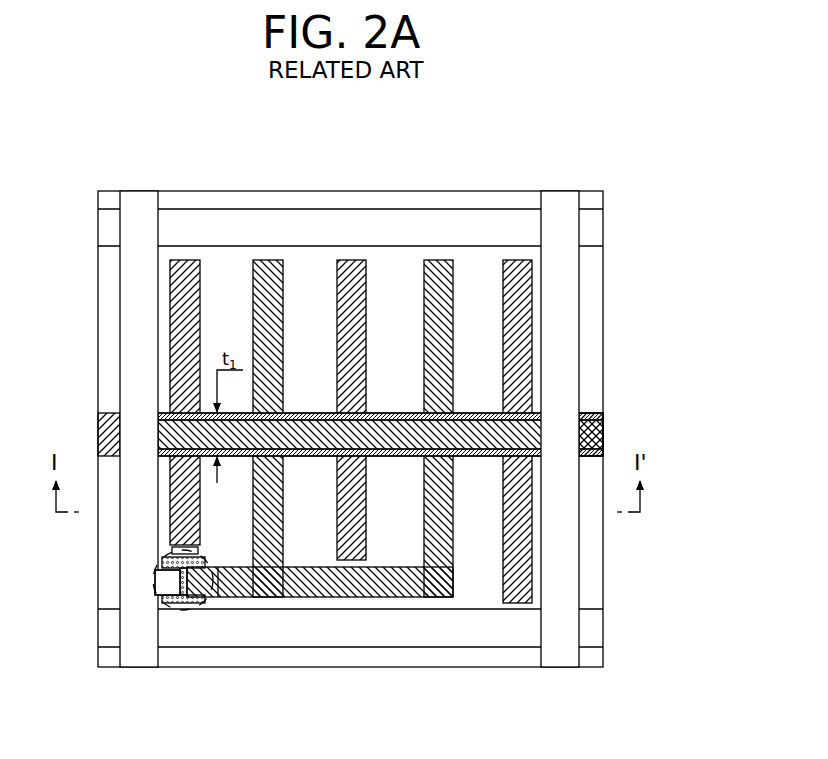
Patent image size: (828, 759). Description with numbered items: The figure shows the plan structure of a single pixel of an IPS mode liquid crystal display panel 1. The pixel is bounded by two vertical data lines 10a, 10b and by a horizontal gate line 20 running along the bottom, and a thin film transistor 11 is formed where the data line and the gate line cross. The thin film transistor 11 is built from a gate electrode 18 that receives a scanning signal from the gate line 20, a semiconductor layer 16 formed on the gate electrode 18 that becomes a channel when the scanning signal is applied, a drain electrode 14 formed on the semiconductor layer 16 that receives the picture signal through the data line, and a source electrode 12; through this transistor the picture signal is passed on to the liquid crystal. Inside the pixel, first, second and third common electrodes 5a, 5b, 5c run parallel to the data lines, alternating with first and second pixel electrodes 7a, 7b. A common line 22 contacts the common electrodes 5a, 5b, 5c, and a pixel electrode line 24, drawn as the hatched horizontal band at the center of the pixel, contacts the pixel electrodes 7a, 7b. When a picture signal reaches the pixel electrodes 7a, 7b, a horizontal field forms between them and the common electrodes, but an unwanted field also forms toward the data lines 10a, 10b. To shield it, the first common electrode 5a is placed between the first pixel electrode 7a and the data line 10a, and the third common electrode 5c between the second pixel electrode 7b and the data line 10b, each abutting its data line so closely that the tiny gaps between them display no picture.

The liquid crystal display panel 1 is at (628, 218).
The first common electrode 5a is at (185, 260).
The second common electrode 5b is at (352, 260).
The third common electrode 5c is at (518, 260).
The first pixel electrode 7a is at (268, 260).
The second pixel electrode 7b is at (440, 260).
The data line 10a is at (138, 660).
The data line 10b is at (562, 655).
The thin film transistor 11 is at (152, 597).
The source electrode 12 is at (160, 580).
The drain electrode 14 is at (226, 610).
The semiconductor layer 16 is at (182, 605).
The gate electrode 18 is at (172, 551).
The gate line 20 is at (420, 635).
The common line 22 is at (108, 424).
The pixel electrode line 24 is at (541, 416).